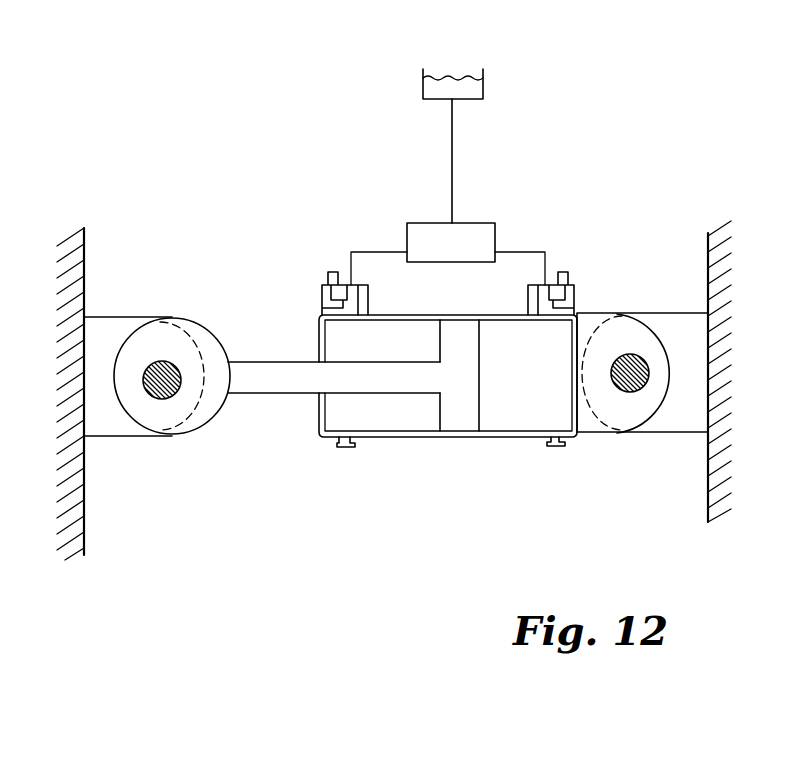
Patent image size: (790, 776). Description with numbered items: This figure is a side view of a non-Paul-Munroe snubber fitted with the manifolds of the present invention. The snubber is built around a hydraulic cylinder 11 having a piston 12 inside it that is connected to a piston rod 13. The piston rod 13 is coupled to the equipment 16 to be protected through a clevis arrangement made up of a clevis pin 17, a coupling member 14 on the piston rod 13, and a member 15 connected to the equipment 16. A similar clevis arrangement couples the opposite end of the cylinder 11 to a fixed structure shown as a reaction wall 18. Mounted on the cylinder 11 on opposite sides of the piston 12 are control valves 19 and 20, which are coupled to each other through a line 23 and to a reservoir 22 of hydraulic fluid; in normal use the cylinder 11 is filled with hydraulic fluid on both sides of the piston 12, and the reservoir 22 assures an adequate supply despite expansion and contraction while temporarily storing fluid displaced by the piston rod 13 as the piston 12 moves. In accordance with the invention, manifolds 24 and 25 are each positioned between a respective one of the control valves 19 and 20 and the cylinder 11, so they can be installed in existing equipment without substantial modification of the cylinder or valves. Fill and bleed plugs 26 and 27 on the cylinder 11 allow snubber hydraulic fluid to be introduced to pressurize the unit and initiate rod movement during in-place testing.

The hydraulic cylinder 11 is at (522, 437).
The piston 12 is at (450, 418).
The piston rod 13 is at (277, 362).
The coupling member 14 is at (205, 415).
The member 15 is at (113, 317).
The equipment 16 is at (84, 242).
The clevis pin 17 is at (165, 394).
The reaction wall 18 is at (708, 478).
The control valve 19 is at (423, 254).
The control valve 20 is at (508, 260).
The reservoir 22 is at (454, 77).
The line 23 is at (452, 163).
The manifold 24 is at (368, 299).
The manifold 25 is at (527, 294).
The fill and bleed plug 26 is at (340, 447).
The fill and bleed plug 27 is at (556, 448).